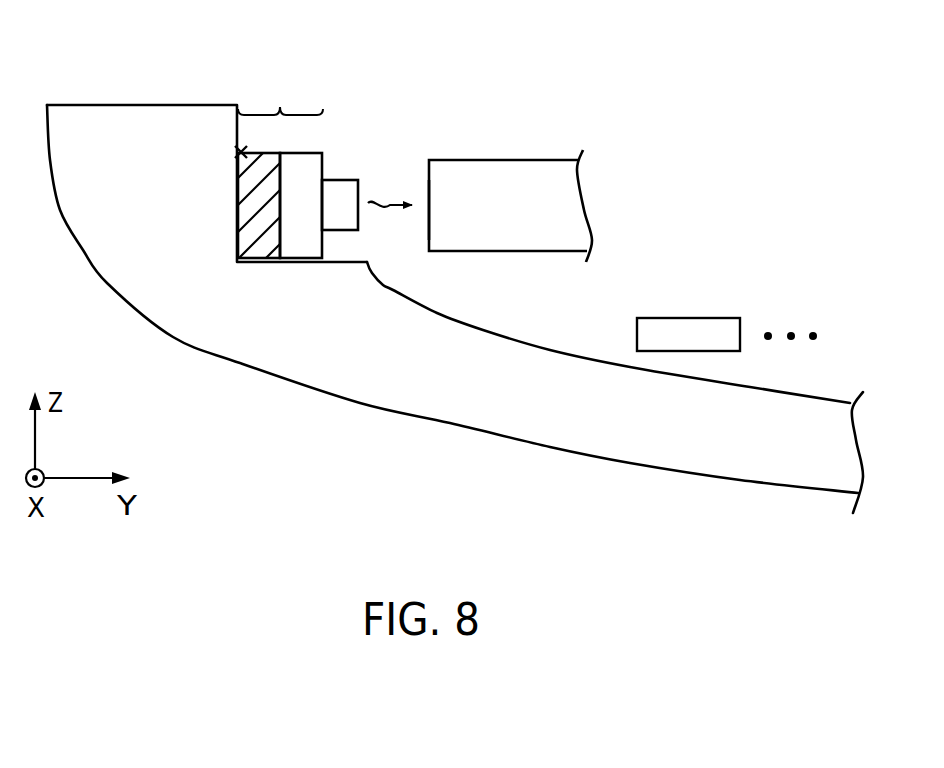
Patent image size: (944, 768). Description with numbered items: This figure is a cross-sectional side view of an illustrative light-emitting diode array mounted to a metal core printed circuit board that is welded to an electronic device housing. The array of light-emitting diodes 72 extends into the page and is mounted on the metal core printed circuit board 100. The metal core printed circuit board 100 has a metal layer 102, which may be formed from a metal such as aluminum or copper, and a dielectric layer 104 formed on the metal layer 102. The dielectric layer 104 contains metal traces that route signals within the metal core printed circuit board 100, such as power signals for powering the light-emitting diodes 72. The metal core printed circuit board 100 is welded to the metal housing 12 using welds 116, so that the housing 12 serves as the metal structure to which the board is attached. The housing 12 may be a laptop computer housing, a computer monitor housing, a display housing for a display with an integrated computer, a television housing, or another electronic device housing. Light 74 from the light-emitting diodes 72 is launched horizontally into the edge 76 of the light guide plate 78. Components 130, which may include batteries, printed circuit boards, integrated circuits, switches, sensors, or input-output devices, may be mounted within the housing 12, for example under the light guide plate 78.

The housing 12 is at (632, 447).
The light-emitting diode 72 is at (337, 179).
The light 74 is at (390, 201).
The edge 76 is at (428, 227).
The light guide plate 78 is at (510, 173).
The metal core printed circuit board 100 is at (280, 95).
The metal layer 102 is at (262, 252).
The dielectric layer 104 is at (306, 252).
The weld 116 is at (238, 152).
The components 130 is at (702, 325).